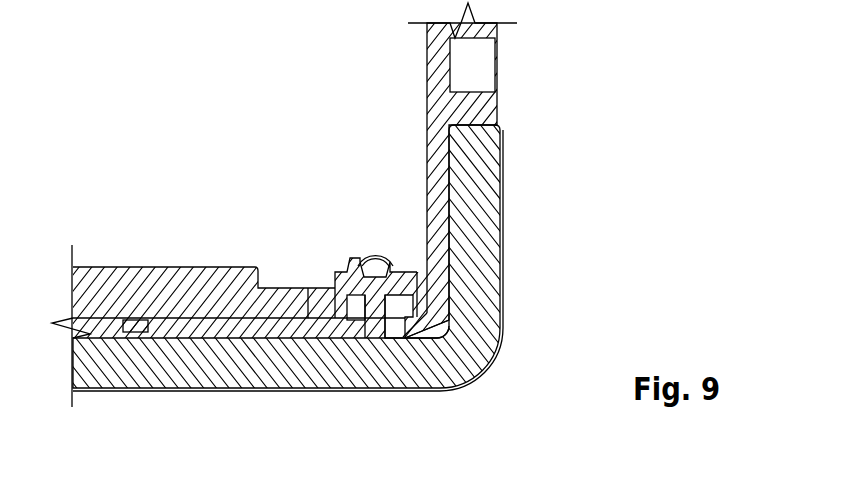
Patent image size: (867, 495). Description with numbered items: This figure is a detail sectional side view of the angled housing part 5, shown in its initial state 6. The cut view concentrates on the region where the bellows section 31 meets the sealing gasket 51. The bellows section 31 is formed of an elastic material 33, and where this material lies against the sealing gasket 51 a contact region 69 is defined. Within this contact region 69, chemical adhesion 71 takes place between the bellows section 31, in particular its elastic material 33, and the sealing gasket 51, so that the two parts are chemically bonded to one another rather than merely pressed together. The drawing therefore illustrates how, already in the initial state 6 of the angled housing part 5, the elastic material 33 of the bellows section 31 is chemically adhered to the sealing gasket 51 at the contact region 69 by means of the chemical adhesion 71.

The angled housing part 5 is at (341, 268).
The initial state 6 is at (360, 237).
The bellows section 31 is at (358, 207).
The elastic material 33 is at (398, 260).
The sealing gasket 51 is at (478, 283).
The contact region 69 is at (506, 311).
The chemical adhesion 71 is at (398, 339).